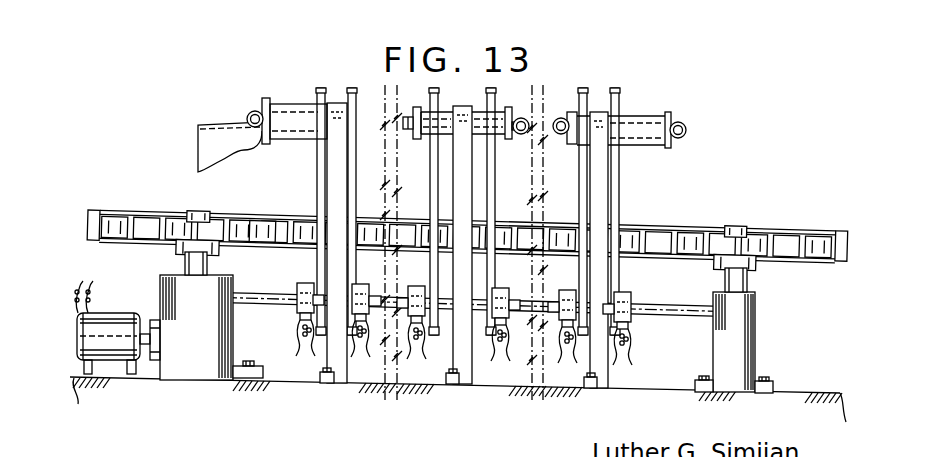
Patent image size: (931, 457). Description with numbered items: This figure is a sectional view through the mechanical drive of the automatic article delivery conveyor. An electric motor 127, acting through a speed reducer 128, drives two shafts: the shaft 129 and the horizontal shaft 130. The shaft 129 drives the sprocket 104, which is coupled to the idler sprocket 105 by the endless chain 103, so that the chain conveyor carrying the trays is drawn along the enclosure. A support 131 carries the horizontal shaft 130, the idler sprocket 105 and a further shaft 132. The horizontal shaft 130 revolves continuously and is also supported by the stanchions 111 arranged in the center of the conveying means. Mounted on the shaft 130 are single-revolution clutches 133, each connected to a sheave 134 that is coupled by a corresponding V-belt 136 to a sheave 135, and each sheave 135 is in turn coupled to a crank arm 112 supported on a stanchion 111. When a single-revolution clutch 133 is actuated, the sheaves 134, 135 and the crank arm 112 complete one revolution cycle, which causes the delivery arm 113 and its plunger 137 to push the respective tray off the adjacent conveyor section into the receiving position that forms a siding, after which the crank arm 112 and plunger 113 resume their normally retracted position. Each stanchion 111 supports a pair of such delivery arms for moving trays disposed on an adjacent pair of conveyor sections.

The endless chain 103 is at (140, 210).
The sprocket 104 is at (258, 226).
The idler sprocket 105 is at (785, 233).
The stanchion 111 is at (336, 103).
The crank arm 112 is at (266, 100).
The delivery plunger 113 is at (403, 116).
The electric motor 127 is at (121, 325).
The speed reducer 128 is at (217, 329).
The shaft 129 is at (204, 263).
The horizontal shaft 130 is at (272, 296).
The support 131 is at (750, 330).
The shaft 132 is at (737, 283).
The single-revolution clutch 133 is at (298, 318).
The sheave 134 is at (347, 335).
The sheave 135 is at (320, 90).
The V-belt 136 is at (354, 176).
The plunger 137 is at (249, 116).